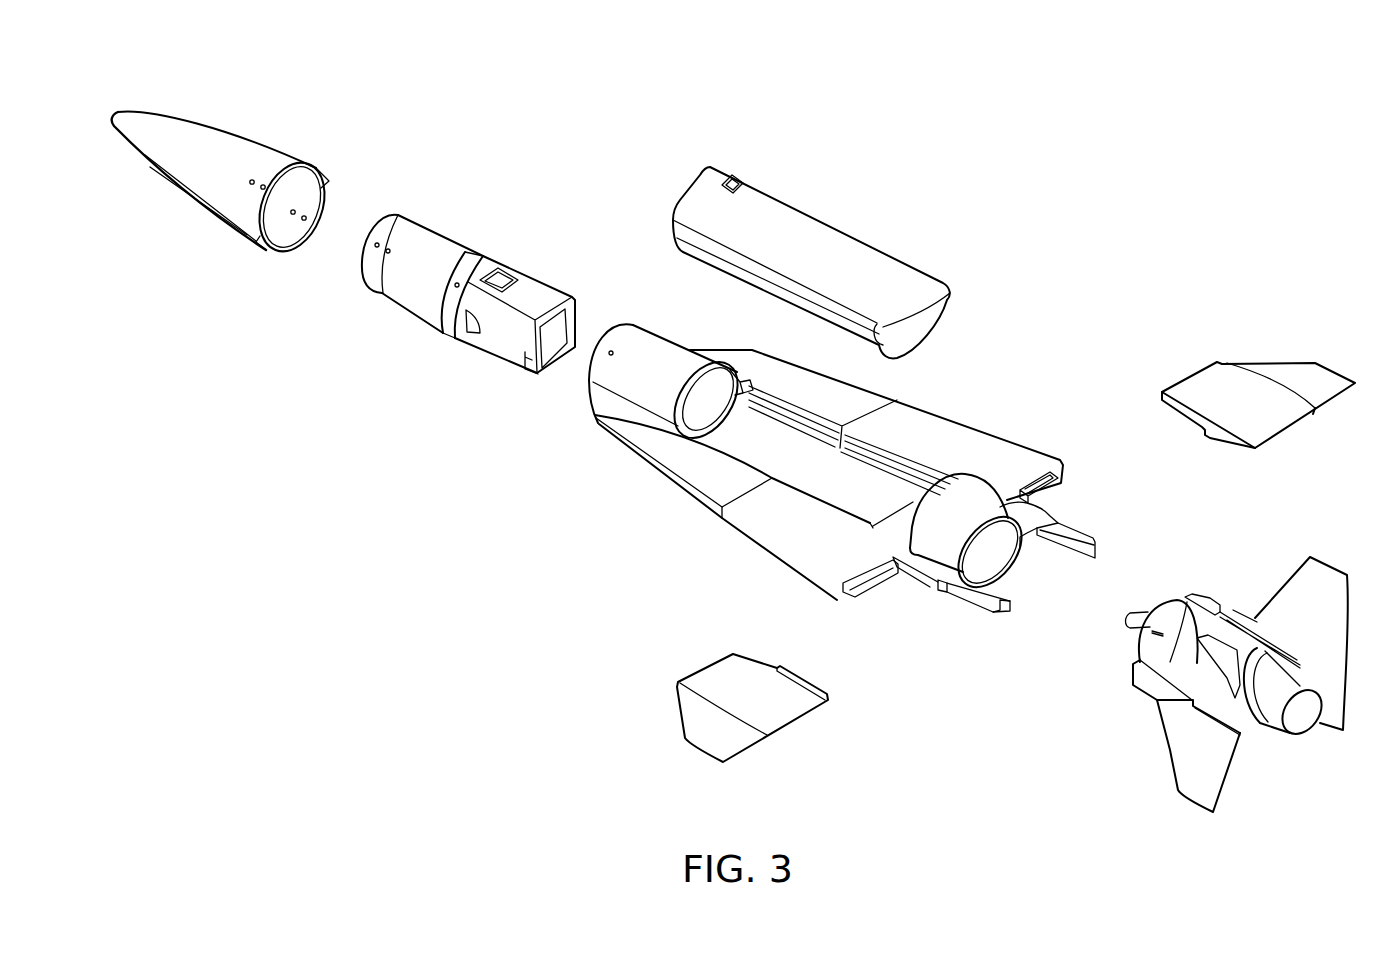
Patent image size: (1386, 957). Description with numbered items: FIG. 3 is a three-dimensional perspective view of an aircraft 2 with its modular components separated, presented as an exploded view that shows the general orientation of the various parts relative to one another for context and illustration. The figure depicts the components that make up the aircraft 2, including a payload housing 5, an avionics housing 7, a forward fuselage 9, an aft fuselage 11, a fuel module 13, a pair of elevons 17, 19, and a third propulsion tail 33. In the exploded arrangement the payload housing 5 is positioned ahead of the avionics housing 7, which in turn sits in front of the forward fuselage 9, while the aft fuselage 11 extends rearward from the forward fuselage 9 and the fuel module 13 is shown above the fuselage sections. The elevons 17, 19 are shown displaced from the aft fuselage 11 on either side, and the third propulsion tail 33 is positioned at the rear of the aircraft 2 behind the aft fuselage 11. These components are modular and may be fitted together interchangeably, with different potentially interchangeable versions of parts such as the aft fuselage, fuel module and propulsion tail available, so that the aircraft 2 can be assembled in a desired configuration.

The aircraft 2 is at (1053, 92).
The payload housing 5 is at (216, 150).
The avionics housing 7 is at (439, 251).
The forward fuselage 9 is at (690, 465).
The aft fuselage 11 is at (934, 436).
The fuel module 13 is at (805, 232).
The elevon 17 is at (785, 710).
The elevon 19 is at (1270, 400).
The third propulsion tail 33 is at (1133, 733).